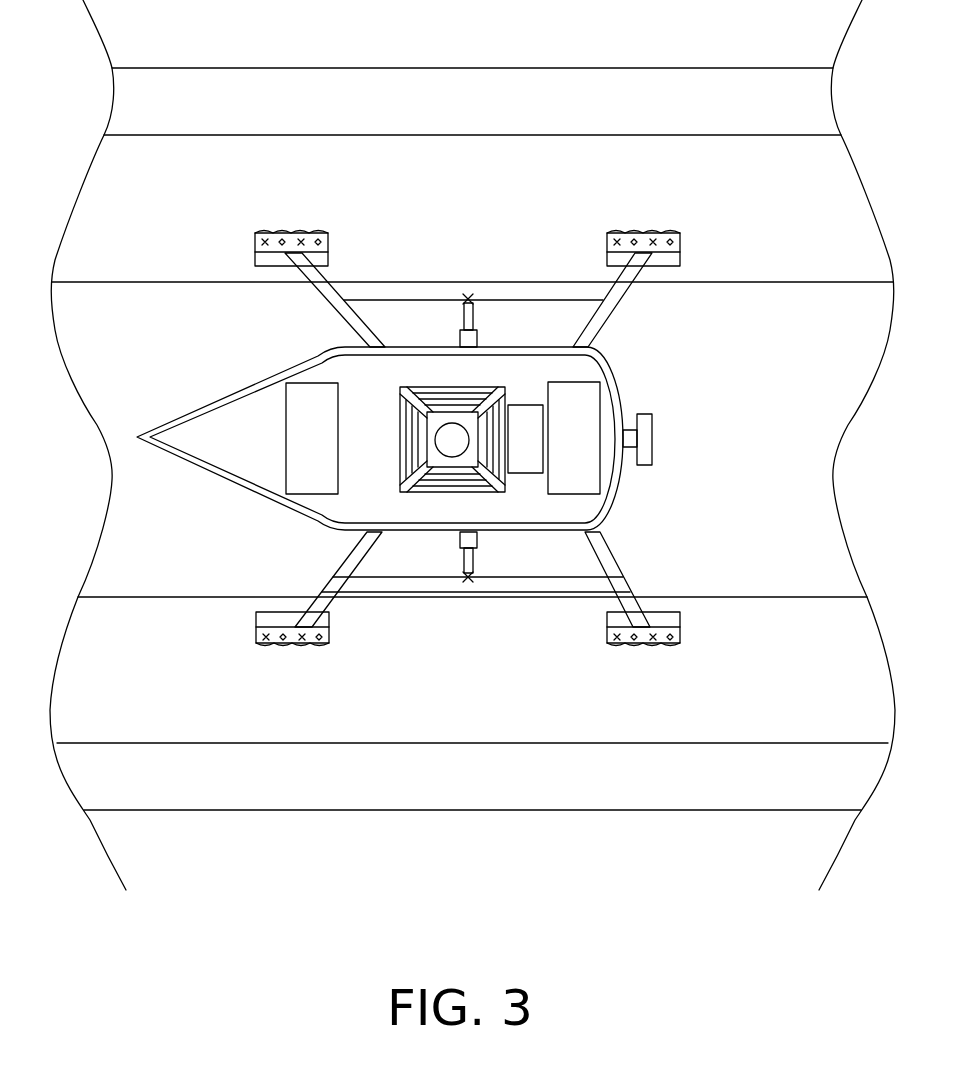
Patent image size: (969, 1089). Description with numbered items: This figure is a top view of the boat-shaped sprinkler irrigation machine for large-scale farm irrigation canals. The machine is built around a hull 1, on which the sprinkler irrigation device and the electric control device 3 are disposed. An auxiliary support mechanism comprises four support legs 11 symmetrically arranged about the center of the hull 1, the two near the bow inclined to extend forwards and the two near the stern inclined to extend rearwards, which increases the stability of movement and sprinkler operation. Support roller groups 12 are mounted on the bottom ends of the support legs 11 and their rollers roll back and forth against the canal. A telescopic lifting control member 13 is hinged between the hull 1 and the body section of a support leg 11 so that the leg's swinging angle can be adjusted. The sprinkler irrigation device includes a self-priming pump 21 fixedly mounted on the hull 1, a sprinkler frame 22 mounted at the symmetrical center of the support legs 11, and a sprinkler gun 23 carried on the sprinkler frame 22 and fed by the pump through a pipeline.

The hull 1 is at (215, 438).
The support legs 11 is at (330, 290).
The support roller groups 12 is at (288, 250).
The telescopic lifting control member 13 is at (452, 447).
The sprinkler gun 23 is at (457, 412).
The electric control device 3 is at (312, 443).
The sprinkler frame 22 is at (425, 495).
The self-priming pump 21 is at (525, 452).